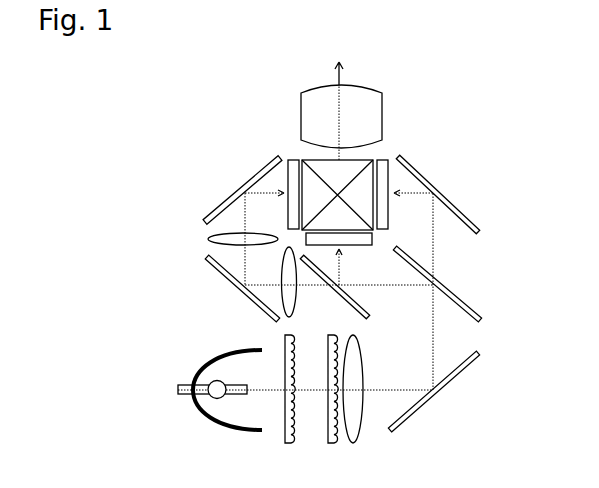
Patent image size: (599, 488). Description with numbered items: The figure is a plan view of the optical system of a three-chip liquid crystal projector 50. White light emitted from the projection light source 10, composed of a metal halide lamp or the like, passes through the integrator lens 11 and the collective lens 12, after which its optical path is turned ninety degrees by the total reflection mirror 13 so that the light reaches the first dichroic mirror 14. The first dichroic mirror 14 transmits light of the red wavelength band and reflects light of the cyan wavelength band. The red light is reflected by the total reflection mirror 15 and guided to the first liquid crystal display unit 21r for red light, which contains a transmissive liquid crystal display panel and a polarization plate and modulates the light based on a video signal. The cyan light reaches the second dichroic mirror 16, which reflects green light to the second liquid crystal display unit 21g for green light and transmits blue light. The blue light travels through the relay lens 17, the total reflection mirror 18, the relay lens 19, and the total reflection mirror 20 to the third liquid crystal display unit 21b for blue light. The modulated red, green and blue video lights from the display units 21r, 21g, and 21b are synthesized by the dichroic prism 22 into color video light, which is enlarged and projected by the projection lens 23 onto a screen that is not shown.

The liquid crystal projector 50 is at (432, 97).
The projection lens 23 is at (372, 93).
The dichroic prism 22 is at (371, 158).
The third liquid crystal display unit 21b is at (295, 158).
The first liquid crystal display unit 21r is at (390, 212).
The second liquid crystal display unit 21g is at (353, 246).
The total reflection mirror 20 is at (220, 205).
The relay lens 19 is at (208, 238).
The total reflection mirror 18 is at (207, 257).
The relay lens 17 is at (297, 295).
The second dichroic mirror 16 is at (370, 312).
The total reflection mirror 15 is at (480, 232).
The first dichroic mirror 14 is at (480, 322).
The total reflection mirror 13 is at (440, 397).
The collective lens 12 is at (362, 442).
The integrator lens 11 is at (340, 458).
The projection light source 10 is at (217, 358).